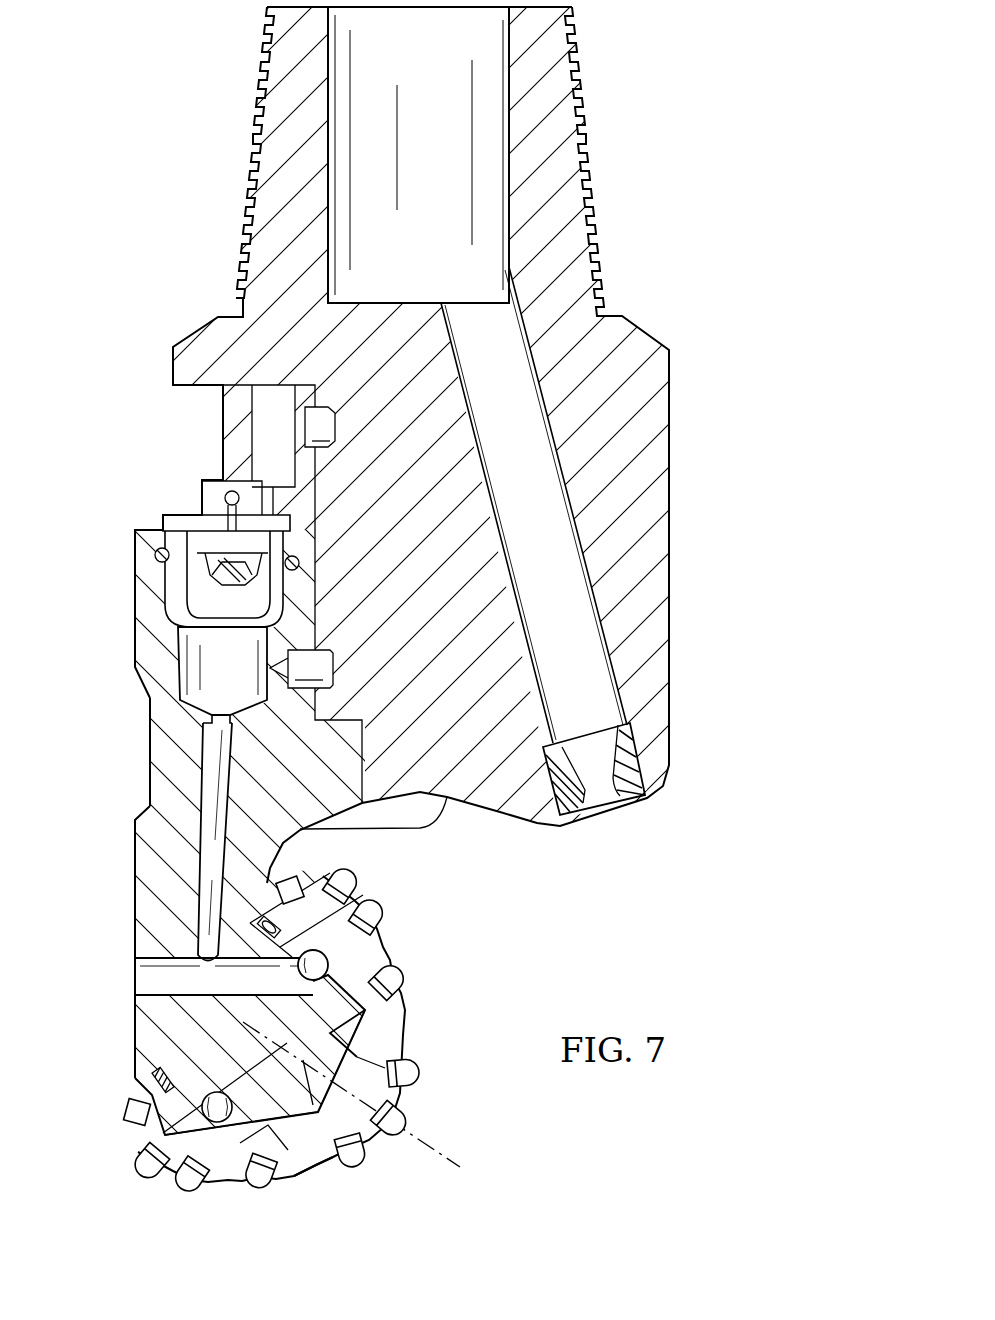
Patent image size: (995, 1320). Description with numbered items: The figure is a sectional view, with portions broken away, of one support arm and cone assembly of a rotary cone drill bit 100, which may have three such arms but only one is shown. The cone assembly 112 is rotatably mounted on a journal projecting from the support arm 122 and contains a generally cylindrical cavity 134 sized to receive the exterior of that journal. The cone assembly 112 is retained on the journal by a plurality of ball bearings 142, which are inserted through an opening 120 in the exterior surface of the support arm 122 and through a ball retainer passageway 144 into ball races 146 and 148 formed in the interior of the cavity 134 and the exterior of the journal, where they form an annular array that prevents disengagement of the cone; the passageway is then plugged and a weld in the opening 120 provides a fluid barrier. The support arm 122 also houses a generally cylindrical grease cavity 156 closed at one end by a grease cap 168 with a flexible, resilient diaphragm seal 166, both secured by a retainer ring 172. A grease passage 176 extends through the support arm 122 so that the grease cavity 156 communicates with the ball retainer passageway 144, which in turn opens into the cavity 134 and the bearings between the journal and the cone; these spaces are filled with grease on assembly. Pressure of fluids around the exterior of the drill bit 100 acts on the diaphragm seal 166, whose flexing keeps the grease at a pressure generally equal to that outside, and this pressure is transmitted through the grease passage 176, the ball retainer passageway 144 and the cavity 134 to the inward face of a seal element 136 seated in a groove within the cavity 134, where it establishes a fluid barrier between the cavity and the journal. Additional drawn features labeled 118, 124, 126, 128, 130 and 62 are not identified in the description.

The rotary cone drill bit 100 is at (497, 660).
The bit body 118 is at (672, 454).
The opening 120 is at (586, 102).
The support arm 122 is at (148, 783).
The leg outer surface 124 is at (137, 855).
The roller cone 126 is at (127, 1115).
The cutting inserts 128 is at (410, 984).
The nozzle 130 is at (613, 825).
The cone assembly 112 is at (310, 1158).
The cylindrical cavity 134 is at (190, 1088).
The seal element 136 is at (148, 1076).
The ball bearings 142 is at (385, 952).
The ball retainer passageway 144 is at (139, 987).
The ball race 146 is at (185, 1100).
The ball race 148 is at (243, 1081).
The grease cavity 156 is at (190, 663).
The diaphragm seal 166 is at (207, 557).
The grease cap 168 is at (222, 482).
The retainer ring 172 is at (152, 556).
The grease passage 176 is at (200, 878).
The fixed cutter 62 is at (287, 877).